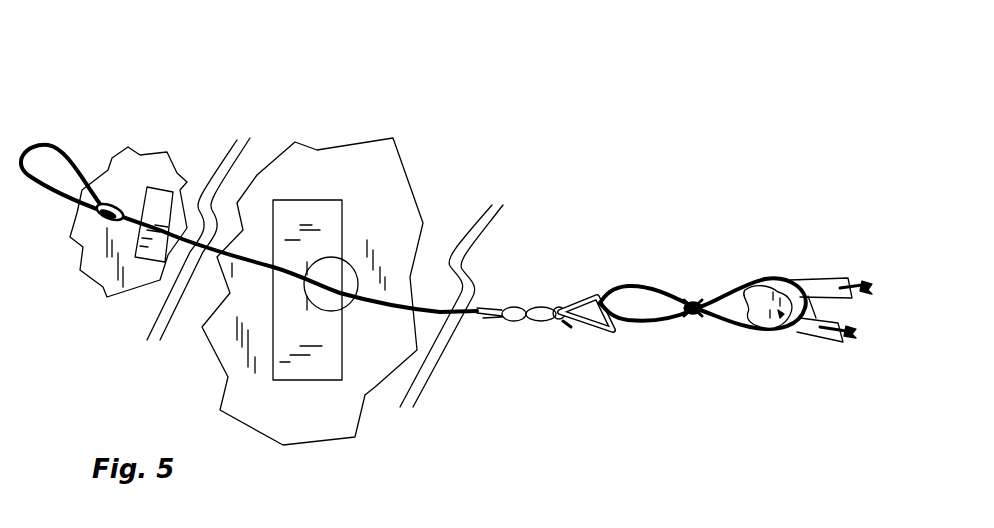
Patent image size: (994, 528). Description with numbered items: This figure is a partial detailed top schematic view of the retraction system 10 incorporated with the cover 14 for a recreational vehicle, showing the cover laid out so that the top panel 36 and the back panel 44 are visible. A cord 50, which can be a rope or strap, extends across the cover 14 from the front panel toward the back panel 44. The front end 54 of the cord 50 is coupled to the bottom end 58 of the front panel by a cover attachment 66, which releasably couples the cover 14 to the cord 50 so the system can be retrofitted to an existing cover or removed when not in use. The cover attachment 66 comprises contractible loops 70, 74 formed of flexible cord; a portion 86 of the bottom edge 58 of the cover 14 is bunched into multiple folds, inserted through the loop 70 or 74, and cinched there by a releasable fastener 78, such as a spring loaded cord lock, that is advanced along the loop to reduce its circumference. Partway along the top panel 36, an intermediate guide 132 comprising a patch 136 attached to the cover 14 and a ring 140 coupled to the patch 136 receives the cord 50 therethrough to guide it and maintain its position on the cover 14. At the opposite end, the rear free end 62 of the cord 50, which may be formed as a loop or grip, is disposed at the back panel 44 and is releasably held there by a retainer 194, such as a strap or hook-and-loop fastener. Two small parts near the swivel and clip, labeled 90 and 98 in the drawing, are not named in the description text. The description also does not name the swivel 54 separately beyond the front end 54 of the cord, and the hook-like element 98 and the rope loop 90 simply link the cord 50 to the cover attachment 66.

The retraction system 10 is at (461, 187).
The cover 14 is at (277, 163).
The top panel 36 is at (387, 178).
The back panel 44 is at (97, 262).
The cord 50 is at (205, 327).
The front end 54 is at (515, 323).
The bottom end 58 is at (853, 300).
The rear free end 62 is at (60, 195).
The cover attachment 66 is at (720, 268).
The contractible loop 70 is at (770, 283).
The contractible loop 74 is at (782, 335).
The releasable fastener 78 is at (807, 290).
The portion 86 is at (677, 318).
The cord 90 is at (609, 288).
The carabiner 98 is at (613, 337).
The intermediate guide 132 is at (318, 225).
The patch 136 is at (307, 370).
The ring 140 is at (347, 305).
The retainer 194 is at (163, 197).